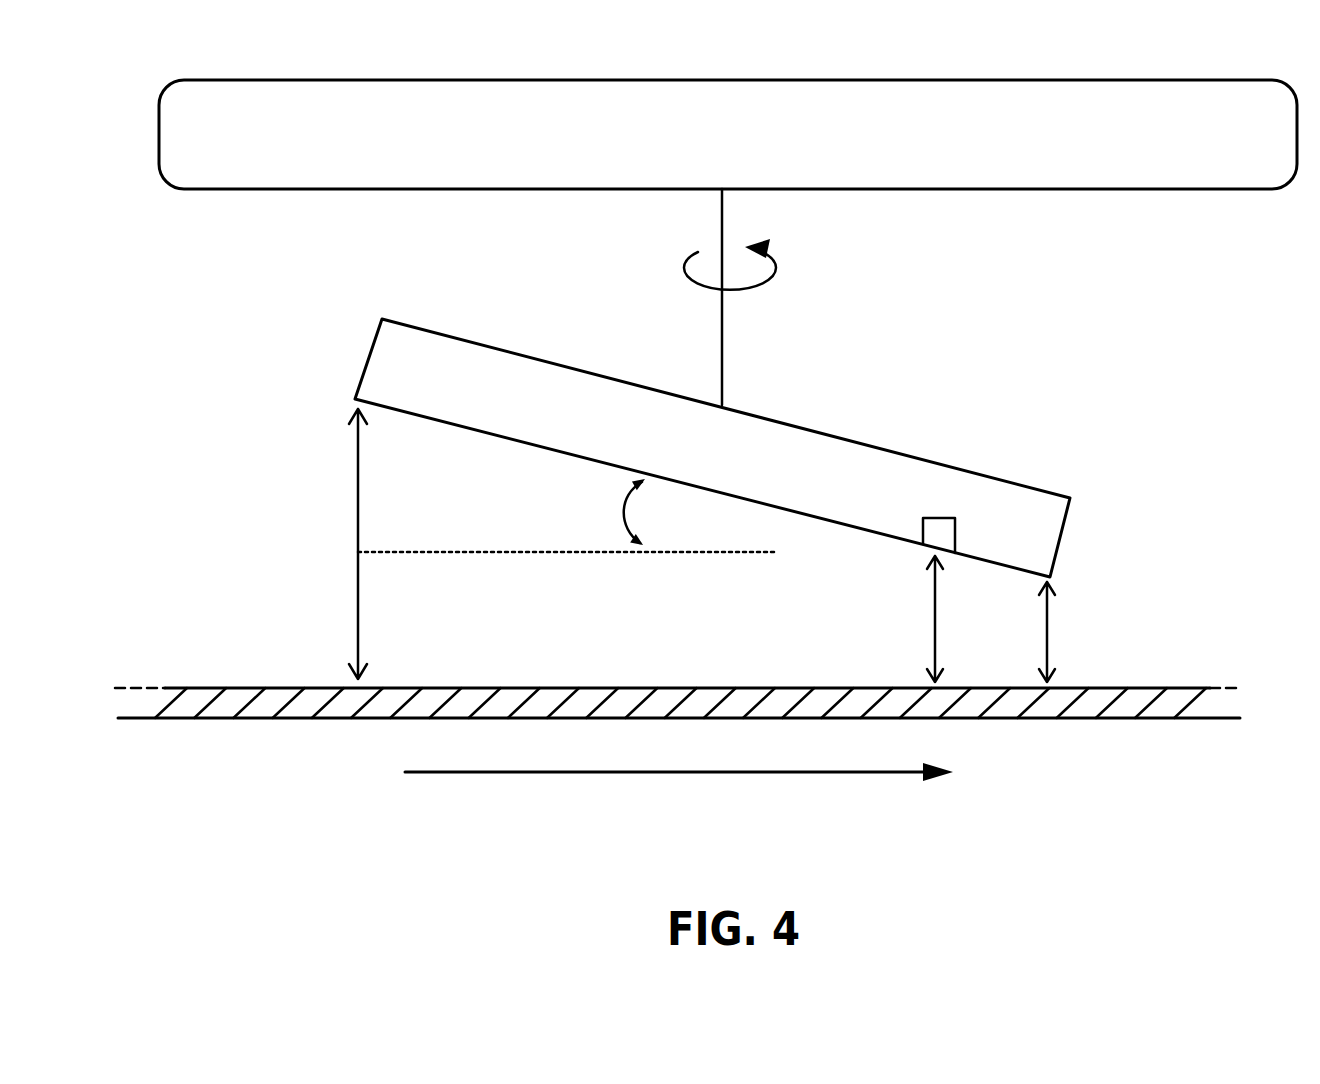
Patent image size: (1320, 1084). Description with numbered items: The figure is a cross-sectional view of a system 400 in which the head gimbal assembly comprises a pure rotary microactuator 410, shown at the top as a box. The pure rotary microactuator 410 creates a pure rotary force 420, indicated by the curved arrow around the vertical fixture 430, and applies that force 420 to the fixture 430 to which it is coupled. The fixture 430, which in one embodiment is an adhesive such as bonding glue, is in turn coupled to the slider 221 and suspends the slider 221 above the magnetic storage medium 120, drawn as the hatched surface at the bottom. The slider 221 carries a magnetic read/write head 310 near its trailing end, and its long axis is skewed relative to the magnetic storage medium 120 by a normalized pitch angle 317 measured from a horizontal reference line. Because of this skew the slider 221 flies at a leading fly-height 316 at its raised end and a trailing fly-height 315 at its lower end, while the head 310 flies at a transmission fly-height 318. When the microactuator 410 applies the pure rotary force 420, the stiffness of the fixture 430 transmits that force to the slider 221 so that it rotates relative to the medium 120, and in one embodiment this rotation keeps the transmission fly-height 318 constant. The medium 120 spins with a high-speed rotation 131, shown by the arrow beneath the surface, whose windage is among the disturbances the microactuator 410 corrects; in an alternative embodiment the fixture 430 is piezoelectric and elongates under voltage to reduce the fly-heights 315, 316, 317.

The system 400 is at (200, 320).
The pure rotary microactuator 410 is at (697, 173).
The pure rotary force 420 is at (778, 262).
The fixture 430 is at (722, 362).
The slider 221 is at (1068, 522).
The magnetic read/write head 310 is at (928, 535).
The fly-height 315 is at (1047, 628).
The fly-height 316 is at (358, 523).
The normalized pitch angle 317 is at (622, 511).
The transmission fly-height 318 is at (935, 628).
The magnetic storage medium 120 is at (1113, 718).
The high-speed rotation 131 is at (707, 774).